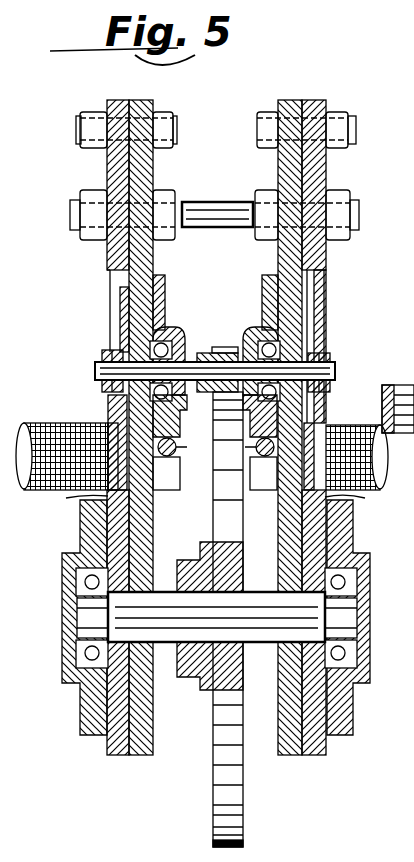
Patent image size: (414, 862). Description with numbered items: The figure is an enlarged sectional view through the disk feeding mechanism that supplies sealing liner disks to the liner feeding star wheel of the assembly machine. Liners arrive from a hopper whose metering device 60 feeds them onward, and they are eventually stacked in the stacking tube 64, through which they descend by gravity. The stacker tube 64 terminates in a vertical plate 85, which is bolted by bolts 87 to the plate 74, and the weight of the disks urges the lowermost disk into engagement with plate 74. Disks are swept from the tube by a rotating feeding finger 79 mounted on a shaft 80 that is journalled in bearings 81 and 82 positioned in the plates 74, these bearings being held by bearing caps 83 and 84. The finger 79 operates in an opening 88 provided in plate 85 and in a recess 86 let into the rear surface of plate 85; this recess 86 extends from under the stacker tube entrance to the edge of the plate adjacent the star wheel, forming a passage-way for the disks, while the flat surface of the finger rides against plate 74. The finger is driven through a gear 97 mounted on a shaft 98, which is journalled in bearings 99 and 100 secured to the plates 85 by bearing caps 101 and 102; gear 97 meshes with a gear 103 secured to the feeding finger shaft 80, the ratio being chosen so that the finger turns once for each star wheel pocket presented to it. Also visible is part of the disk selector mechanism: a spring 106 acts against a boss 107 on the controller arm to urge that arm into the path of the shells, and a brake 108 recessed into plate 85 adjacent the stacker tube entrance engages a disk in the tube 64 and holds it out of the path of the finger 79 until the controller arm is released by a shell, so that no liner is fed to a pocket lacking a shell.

The metering device 60 is at (398, 395).
The stacking tube 64 is at (50, 431).
The plate 74 is at (153, 259).
The feeding finger 79 is at (121, 322).
The shaft 80 is at (100, 372).
The bearing 81 is at (173, 355).
The bearing 82 is at (259, 334).
The bearing cap 83 is at (165, 312).
The bearing cap 84 is at (262, 297).
The vertical plate 85 is at (358, 500).
The recess 86 is at (125, 412).
The bolts 87 is at (97, 113).
The opening 88 is at (112, 277).
The gear 97 is at (216, 487).
The shaft 98 is at (271, 592).
The bearing 99 is at (351, 572).
The bearing 100 is at (77, 577).
The bearing cap 101 is at (66, 687).
The bearing cap 102 is at (360, 687).
The gear 103 is at (235, 347).
The spring 106 is at (260, 440).
The boss 107 is at (258, 452).
The brake 108 is at (122, 470).